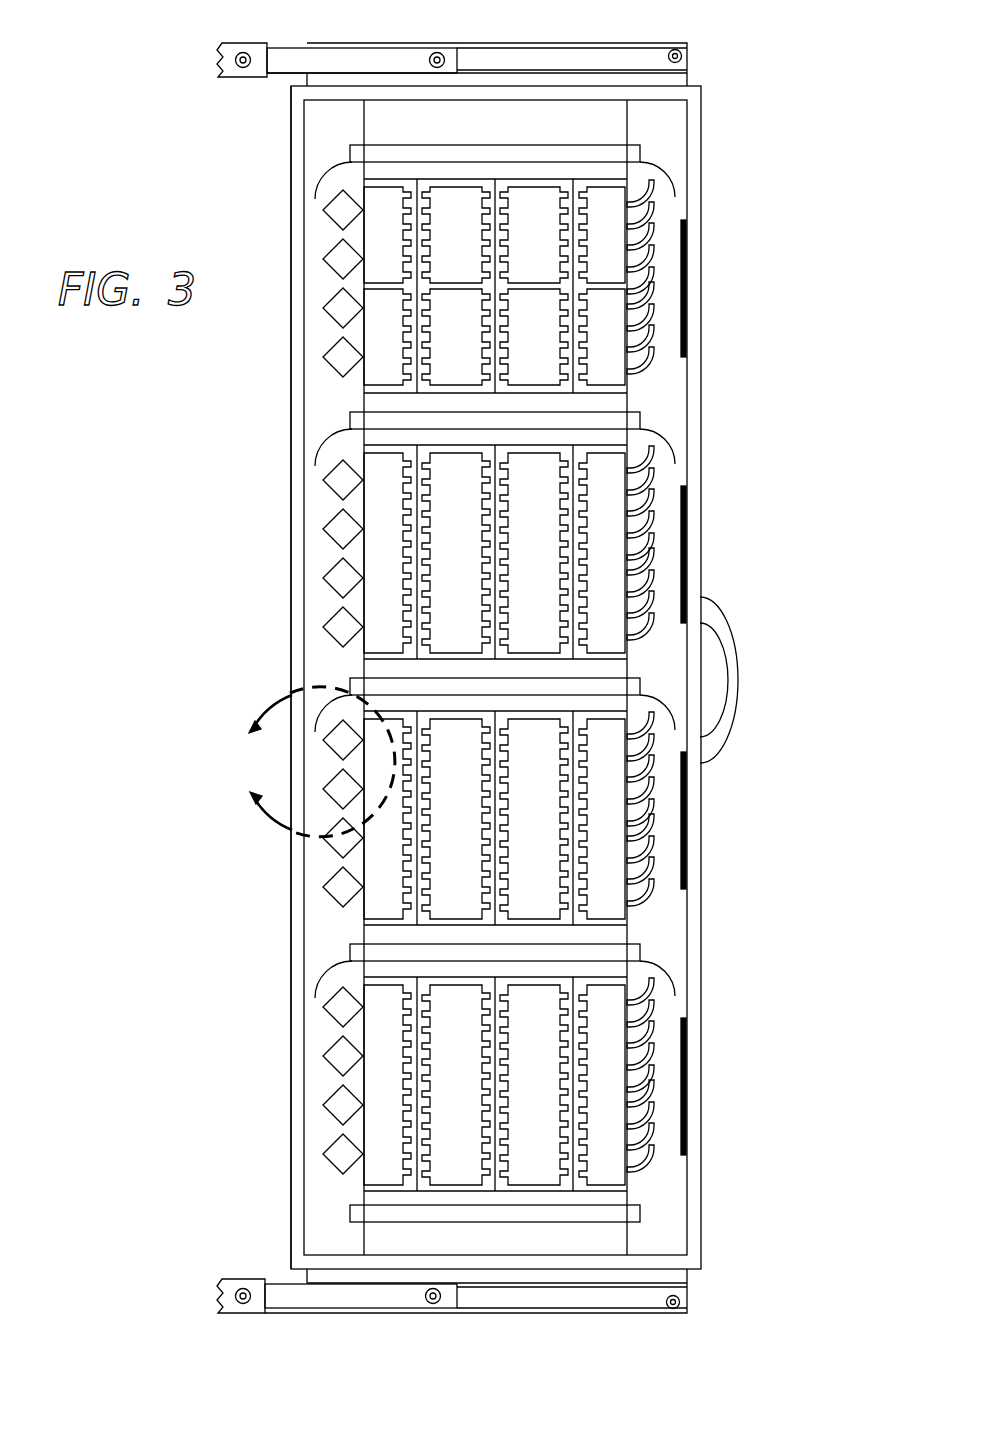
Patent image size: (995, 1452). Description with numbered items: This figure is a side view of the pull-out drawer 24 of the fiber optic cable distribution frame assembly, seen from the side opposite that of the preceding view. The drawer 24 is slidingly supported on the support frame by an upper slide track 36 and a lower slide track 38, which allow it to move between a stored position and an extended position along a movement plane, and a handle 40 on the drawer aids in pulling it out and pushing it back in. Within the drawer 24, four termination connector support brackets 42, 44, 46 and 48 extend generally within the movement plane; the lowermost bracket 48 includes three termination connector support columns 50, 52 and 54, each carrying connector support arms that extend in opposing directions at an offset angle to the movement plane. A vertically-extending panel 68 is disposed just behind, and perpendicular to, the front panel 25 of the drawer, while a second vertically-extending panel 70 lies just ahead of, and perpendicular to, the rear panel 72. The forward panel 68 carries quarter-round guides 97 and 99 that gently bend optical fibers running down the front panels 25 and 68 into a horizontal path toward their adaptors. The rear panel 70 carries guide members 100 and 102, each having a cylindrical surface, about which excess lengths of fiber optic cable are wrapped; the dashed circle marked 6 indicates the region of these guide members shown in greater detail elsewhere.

The detail region shown in FIG. 6 is at (314, 762).
The pull-out drawer 24 is at (724, 107).
The front panel 25 is at (697, 556).
The upper slide track 36 is at (334, 58).
The lower slide track 38 is at (352, 1295).
The handle 40 is at (738, 680).
The termination connector support bracket 42 is at (587, 288).
The termination connector support bracket 44 is at (575, 550).
The termination connector support bracket 46 is at (534, 801).
The lowermost termination connector support bracket 48 is at (534, 1083).
The termination connector support column 50 is at (578, 1150).
The termination connector support column 52 is at (500, 1127).
The termination connector support column 54 is at (422, 1127).
The vertically-extending panel 68 is at (662, 923).
The vertically-extending panel 70 is at (335, 668).
The rear panel 72 is at (290, 605).
The quarter-round guide 97 is at (655, 887).
The quarter-round guide 99 is at (655, 864).
The guide member 100 is at (343, 740).
The guide member 102 is at (343, 790).